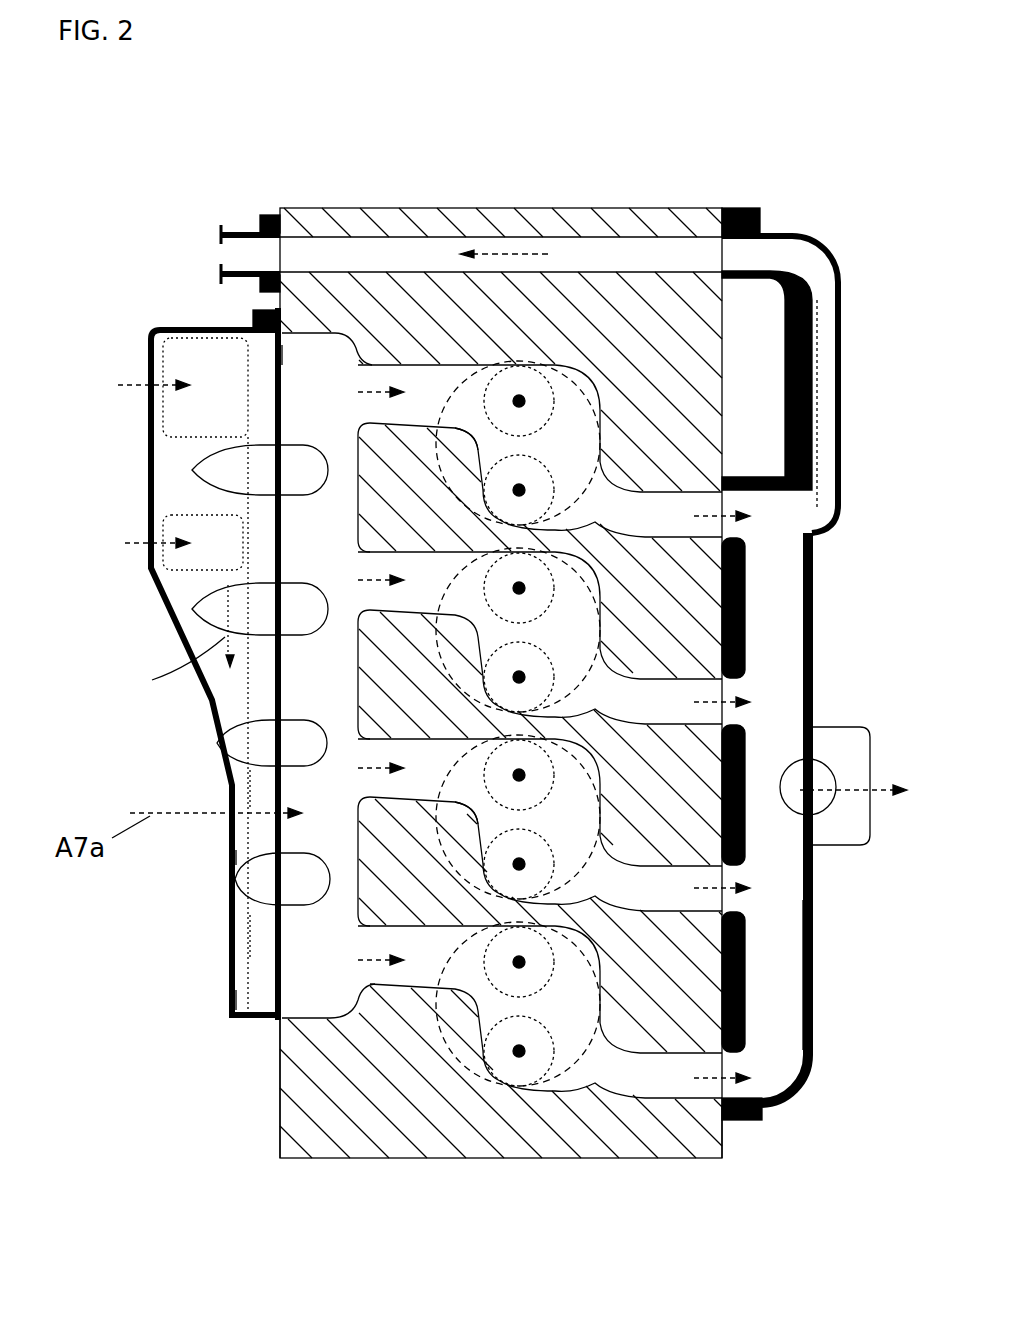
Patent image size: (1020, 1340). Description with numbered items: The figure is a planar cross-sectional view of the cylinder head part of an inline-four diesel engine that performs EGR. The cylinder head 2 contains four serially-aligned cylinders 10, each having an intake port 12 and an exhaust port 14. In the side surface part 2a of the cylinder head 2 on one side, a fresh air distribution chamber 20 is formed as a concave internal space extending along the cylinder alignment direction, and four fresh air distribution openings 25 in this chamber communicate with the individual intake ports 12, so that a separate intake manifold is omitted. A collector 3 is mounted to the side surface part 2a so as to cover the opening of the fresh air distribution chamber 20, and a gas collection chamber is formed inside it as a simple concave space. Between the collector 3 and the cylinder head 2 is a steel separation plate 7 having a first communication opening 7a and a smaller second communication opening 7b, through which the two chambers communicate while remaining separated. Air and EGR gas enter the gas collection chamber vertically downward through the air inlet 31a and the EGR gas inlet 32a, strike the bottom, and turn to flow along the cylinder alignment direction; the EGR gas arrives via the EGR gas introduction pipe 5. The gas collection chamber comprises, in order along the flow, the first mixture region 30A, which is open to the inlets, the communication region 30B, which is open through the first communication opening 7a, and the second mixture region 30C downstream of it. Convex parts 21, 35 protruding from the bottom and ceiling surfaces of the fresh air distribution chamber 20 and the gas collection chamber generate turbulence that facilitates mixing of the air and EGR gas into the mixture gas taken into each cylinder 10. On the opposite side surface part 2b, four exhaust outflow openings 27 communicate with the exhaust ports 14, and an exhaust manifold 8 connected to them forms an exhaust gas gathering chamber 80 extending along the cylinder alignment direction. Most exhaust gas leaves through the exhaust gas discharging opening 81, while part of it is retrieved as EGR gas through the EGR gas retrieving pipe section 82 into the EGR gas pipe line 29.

The cylinder head 2 is at (452, 203).
The side surface part 2a is at (280, 1140).
The side surface part 2b is at (722, 1145).
The collector 3 is at (148, 332).
The EGR gas introduction pipe 5 is at (244, 222).
The separation plate 7 is at (270, 410).
The first communication opening 7a is at (238, 858).
The second communication opening 7b is at (240, 1000).
The exhaust manifold 8 is at (830, 633).
The cylinder 10 is at (600, 450).
The intake port 12 is at (526, 731).
The exhaust port 14 is at (545, 488).
The fresh air distribution chamber 20 is at (292, 360).
The convex part 21 is at (293, 635).
The fresh air distribution opening 25 is at (370, 418).
The exhaust outflow opening 27 is at (760, 535).
The EGR gas pipe line 29 is at (394, 240).
The first mixture region 30A is at (205, 498).
The communication region 30B is at (255, 790).
The second mixture region 30C is at (255, 935).
The air inlet 31a is at (205, 596).
The EGR gas inlet 32a is at (200, 440).
The convex part 35 is at (260, 585).
The exhaust gas gathering chamber 80 is at (790, 1030).
The exhaust gas discharging opening 81 is at (835, 740).
The EGR gas retrieving pipe section 82 is at (843, 407).